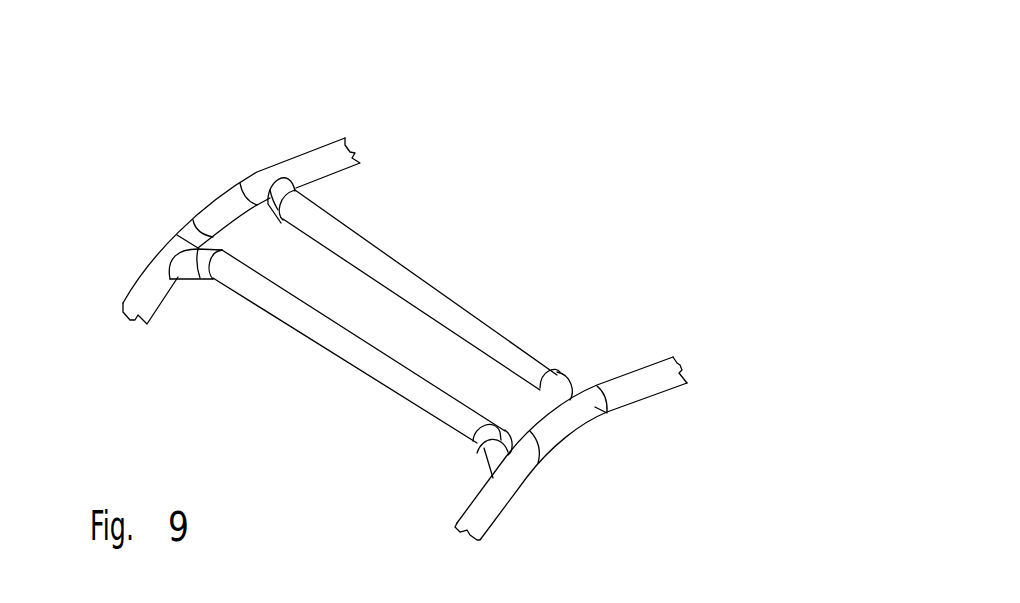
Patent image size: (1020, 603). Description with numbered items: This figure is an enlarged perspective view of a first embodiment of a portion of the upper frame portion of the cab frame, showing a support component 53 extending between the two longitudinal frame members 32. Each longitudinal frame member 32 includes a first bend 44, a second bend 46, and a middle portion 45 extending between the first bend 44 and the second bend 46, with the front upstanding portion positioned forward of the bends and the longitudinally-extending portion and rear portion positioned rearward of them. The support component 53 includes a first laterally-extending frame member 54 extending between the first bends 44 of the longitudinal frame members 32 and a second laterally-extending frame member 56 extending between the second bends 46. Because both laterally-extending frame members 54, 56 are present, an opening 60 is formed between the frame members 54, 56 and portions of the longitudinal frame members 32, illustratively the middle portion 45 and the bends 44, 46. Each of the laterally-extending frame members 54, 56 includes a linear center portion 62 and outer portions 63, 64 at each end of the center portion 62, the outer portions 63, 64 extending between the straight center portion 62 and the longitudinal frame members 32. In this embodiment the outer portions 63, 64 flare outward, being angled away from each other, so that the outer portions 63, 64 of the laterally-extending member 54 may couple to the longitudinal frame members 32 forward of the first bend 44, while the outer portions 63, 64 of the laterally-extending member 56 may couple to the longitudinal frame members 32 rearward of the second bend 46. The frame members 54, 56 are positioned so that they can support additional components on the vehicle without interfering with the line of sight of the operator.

The longitudinal frame member 32 is at (408, 291).
The first bend 44 is at (190, 230).
The middle portion 45 is at (217, 205).
The second bend 46 is at (257, 182).
The support component 53 is at (520, 177).
The first laterally-extending frame member 54 is at (260, 293).
The second laterally-extending frame member 56 is at (537, 359).
The opening 60 is at (457, 368).
The linear center portion 62 is at (393, 323).
The outer portion 63 is at (293, 192).
The outer portion 64 is at (567, 373).